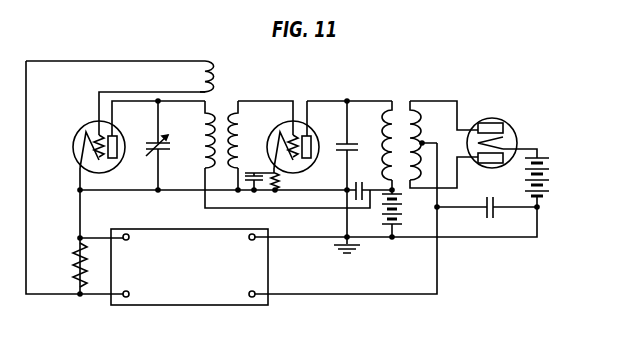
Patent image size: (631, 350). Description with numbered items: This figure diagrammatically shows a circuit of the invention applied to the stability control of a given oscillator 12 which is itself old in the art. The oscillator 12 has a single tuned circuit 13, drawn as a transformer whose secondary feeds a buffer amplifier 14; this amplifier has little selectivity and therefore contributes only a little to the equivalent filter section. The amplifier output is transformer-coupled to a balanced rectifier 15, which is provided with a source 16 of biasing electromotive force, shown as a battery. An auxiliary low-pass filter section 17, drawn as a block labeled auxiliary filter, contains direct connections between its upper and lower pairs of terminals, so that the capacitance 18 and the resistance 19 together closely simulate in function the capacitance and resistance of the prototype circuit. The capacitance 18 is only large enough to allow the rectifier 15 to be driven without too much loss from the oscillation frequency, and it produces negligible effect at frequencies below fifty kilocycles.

The oscillator 12 is at (83, 122).
The single tuned circuit 13 is at (192, 122).
The buffer amplifier 14 is at (294, 130).
The balanced rectifier 15 is at (512, 125).
The source of biasing electromotive force 16 is at (552, 175).
The auxiliary low-pass filter section 17 is at (258, 272).
The capacitance 18 is at (490, 219).
The resistance 19 is at (74, 263).